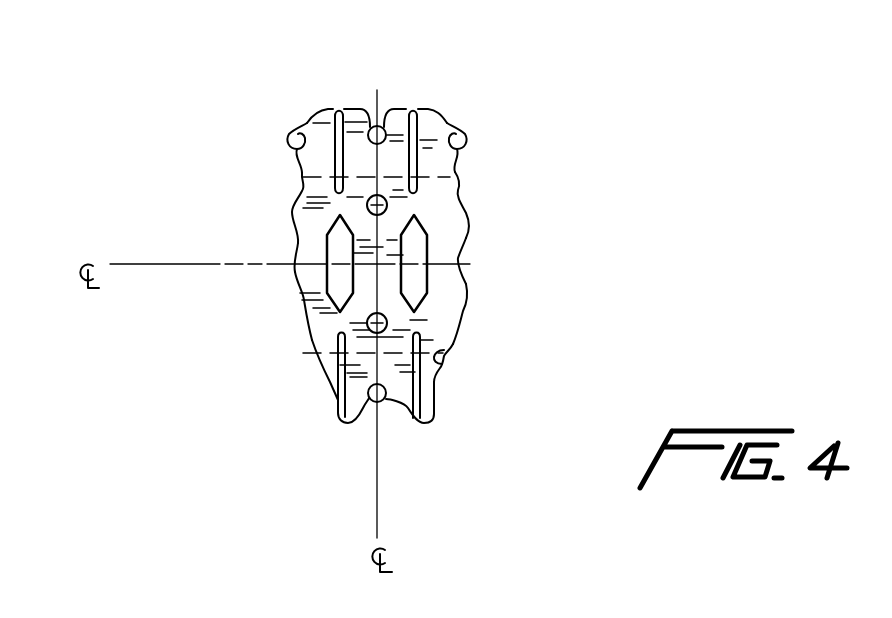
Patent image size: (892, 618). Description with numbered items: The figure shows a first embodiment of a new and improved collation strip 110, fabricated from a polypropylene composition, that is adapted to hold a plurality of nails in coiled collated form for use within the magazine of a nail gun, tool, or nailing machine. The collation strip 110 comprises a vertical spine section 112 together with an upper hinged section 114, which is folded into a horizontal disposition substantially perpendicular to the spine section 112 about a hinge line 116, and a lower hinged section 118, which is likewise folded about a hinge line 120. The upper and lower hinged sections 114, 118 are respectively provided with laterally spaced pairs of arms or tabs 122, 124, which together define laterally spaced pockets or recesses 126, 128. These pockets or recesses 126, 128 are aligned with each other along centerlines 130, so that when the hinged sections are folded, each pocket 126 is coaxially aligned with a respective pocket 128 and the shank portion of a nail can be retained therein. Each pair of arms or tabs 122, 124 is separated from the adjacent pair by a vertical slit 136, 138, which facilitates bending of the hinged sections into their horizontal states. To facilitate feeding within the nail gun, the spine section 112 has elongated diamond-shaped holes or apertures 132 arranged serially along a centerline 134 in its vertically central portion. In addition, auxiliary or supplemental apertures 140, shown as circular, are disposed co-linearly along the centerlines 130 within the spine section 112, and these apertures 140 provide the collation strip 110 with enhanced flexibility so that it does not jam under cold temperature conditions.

The collation strip 110 is at (544, 66).
The vertical spine section 112 is at (295, 278).
The upper hinged section 114 is at (290, 153).
The hinge line 116 is at (296, 192).
The lower hinged section 118 is at (325, 383).
The hinge line 120 is at (443, 365).
The arms or tabs 122 is at (352, 110).
The arms or tabs 124 is at (358, 423).
The pockets or recesses 126 is at (301, 126).
The pockets or recesses 128 is at (383, 403).
The centerlines 130 is at (371, 306).
The diamond-shaped holes or apertures 132 is at (427, 284).
The centerline 134 is at (292, 258).
The vertical slit 136 is at (452, 162).
The vertical slit 138 is at (420, 386).
The auxiliary or supplemental apertures 140 is at (389, 206).